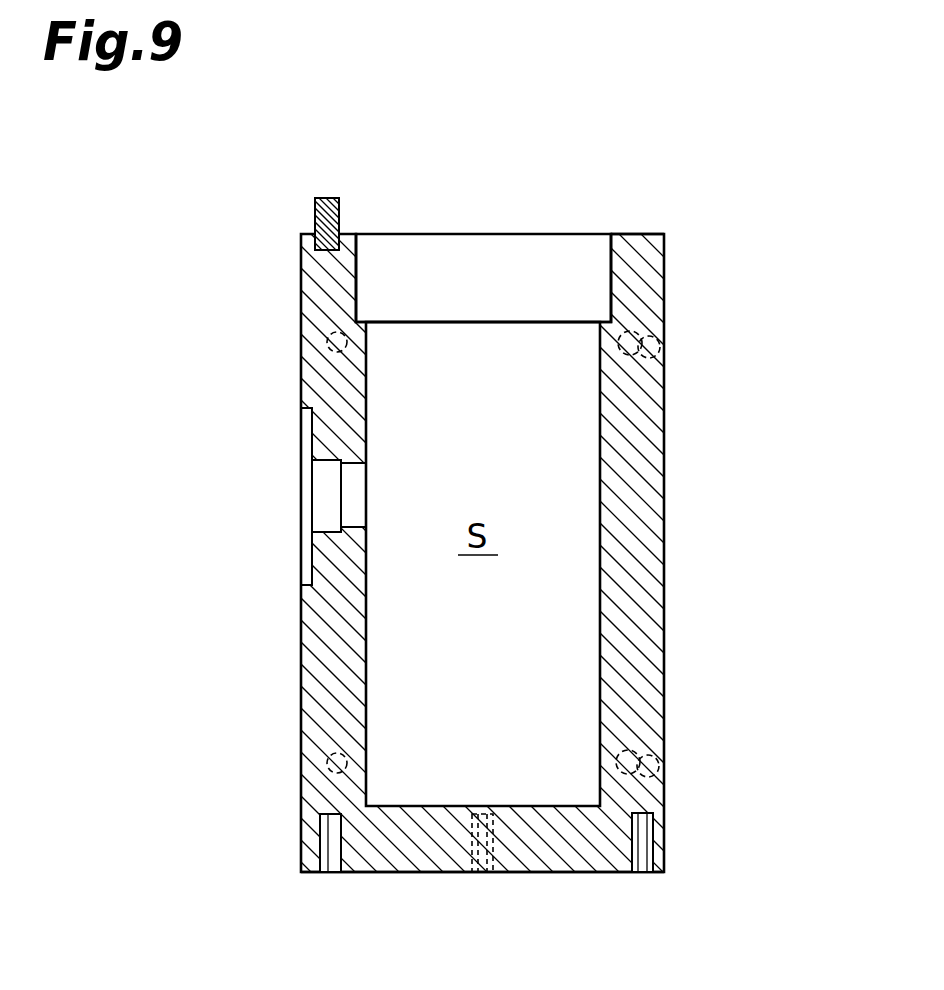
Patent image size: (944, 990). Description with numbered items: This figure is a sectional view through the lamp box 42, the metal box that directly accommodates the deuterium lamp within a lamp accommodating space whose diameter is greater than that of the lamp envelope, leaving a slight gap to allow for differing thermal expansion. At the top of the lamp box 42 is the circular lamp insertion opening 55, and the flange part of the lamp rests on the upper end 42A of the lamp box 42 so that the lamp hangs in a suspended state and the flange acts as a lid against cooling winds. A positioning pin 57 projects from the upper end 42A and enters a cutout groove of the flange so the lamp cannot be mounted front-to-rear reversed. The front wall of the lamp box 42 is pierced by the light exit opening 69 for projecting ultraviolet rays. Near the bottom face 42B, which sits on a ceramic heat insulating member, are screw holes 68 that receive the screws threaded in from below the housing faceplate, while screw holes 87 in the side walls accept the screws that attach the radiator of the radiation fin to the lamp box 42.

The lamp box 42 is at (747, 230).
The upper end of lamp box 42A is at (644, 232).
The bottom face of lamp box 42B is at (390, 873).
The lamp insertion opening 55 is at (579, 240).
The positioning pin 57 is at (316, 213).
The screw hole 68 is at (330, 849).
The light exit opening 69 is at (357, 489).
The screw hole 87 is at (330, 336).